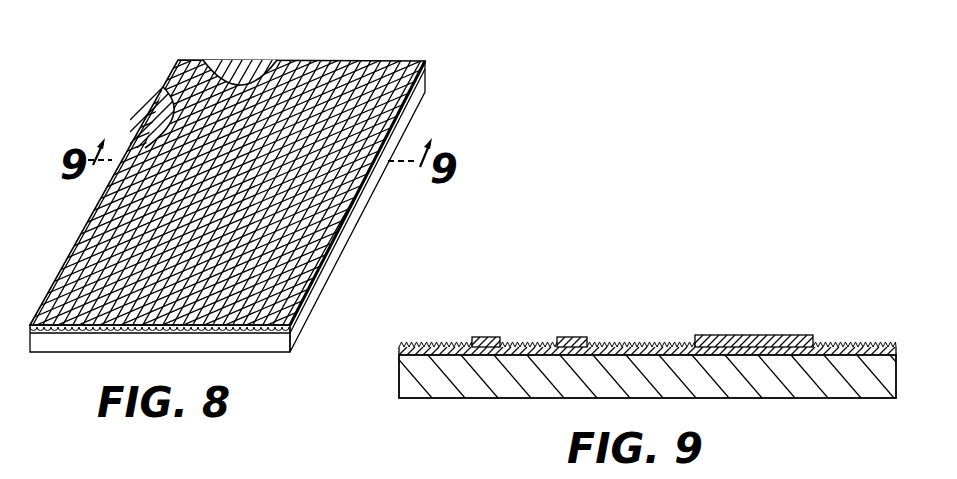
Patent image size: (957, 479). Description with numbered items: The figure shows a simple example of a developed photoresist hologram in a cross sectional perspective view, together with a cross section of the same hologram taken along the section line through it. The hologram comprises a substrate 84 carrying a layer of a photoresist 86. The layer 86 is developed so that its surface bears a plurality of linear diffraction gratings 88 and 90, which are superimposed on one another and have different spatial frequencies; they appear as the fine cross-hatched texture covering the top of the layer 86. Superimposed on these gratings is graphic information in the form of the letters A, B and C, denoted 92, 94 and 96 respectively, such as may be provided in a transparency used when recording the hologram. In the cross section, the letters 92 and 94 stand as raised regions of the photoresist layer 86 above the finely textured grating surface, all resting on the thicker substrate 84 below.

In FIG. 8, the substrate 84 is at (413, 112).
In FIG. 9, the substrate 84 is at (407, 380).
In FIG. 8, the layer of a photoresist 86 is at (427, 74).
In FIG. 9, the layer of a photoresist 86 is at (402, 348).
In FIG. 8, the linear diffraction grating 88 is at (252, 72).
In FIG. 8, the linear diffraction grating 90 is at (154, 112).
In FIG. 8, the letter "A" 92 is at (191, 118).
In FIG. 9, the letter "A" 92 is at (568, 337).
In FIG. 8, the letter "B" 94 is at (323, 113).
In FIG. 9, the letter "B" 94 is at (737, 334).
In FIG. 8, the letter "C" 96 is at (183, 232).